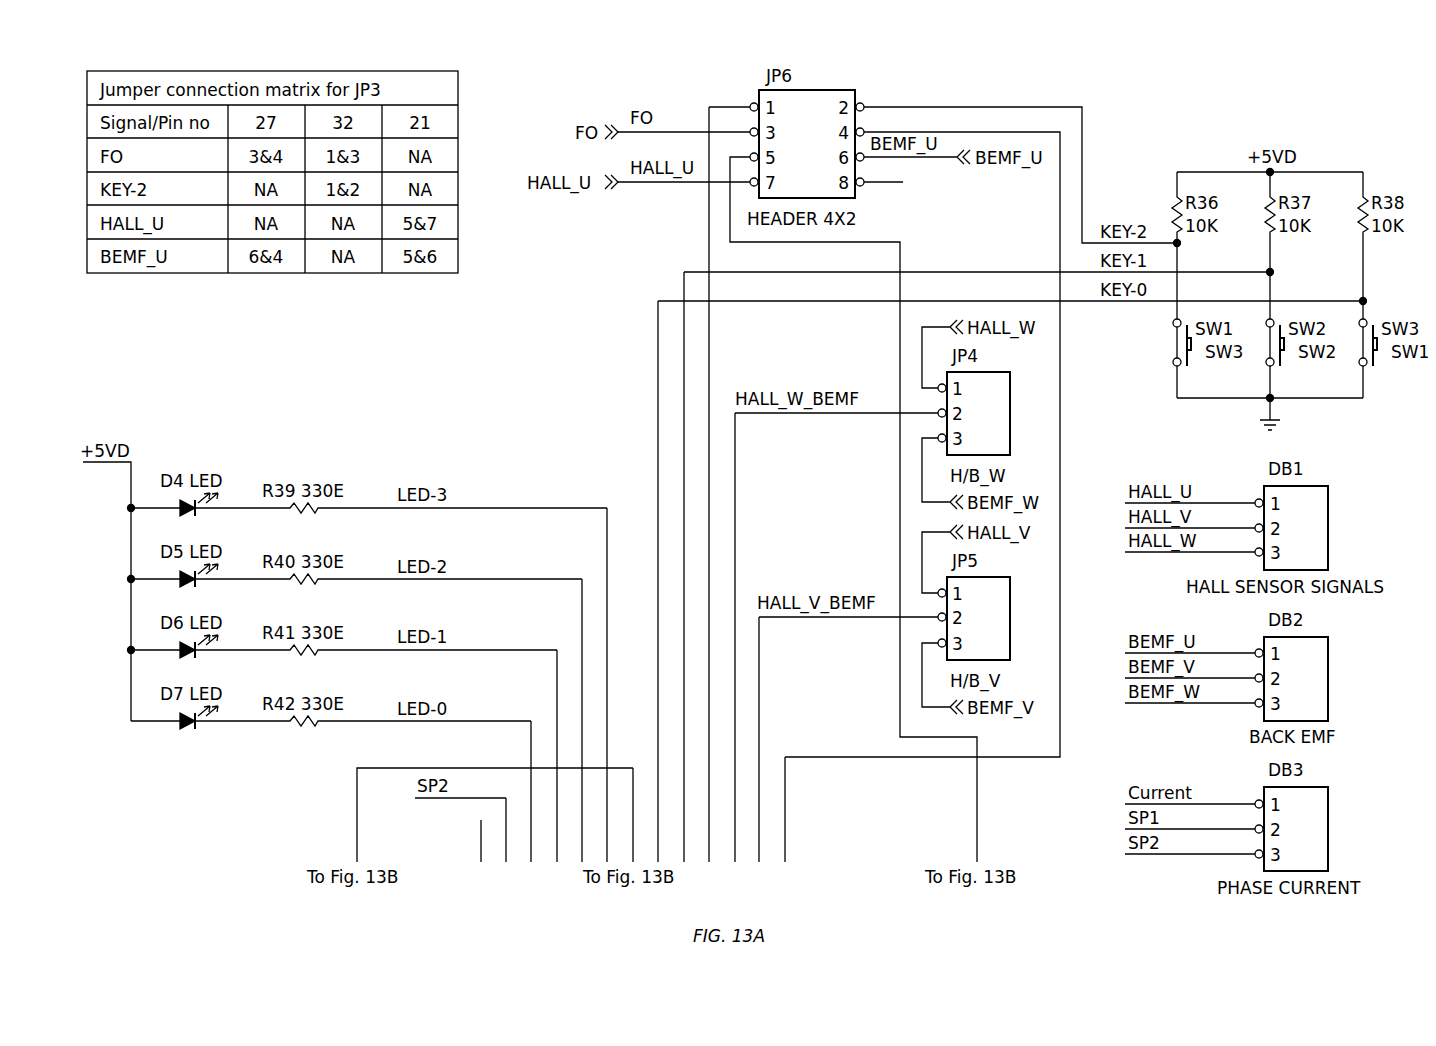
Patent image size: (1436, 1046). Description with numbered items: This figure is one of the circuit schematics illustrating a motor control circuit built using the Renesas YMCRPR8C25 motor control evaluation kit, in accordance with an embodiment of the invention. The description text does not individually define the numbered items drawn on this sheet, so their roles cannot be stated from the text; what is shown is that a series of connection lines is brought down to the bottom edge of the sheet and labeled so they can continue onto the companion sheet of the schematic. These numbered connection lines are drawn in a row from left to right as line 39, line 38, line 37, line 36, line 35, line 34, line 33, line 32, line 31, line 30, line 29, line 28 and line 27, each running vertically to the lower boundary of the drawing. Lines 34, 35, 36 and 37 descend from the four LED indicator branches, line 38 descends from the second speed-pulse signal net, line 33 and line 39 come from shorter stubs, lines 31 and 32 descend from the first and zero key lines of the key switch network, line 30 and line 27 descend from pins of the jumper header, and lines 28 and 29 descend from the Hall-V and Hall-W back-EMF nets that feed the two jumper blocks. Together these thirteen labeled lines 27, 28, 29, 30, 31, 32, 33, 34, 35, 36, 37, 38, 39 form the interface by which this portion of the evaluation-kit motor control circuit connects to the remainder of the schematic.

The connector line 27 to FIG. 13B (JP6 pin 4) 27 is at (776, 809).
The connector line 28 to FIG. 13B (HALL_V_BEMF) 28 is at (839, 739).
The connector line 29 to FIG. 13B (HALL_W_BEMF) 29 is at (827, 637).
The connector line 30 to FIG. 13B (JP6 pin 1) 30 is at (700, 484).
The connector line 31 to FIG. 13B (KEY-1) 31 is at (675, 567).
The connector line 32 to FIG. 13B (KEY-0) 32 is at (649, 581).
The connector line 33 to FIG. 13B 33 is at (624, 815).
The connector line 34 to FIG. 13B (LED-3) 34 is at (598, 685).
The connector line 35 to FIG. 13B (LED-2) 35 is at (573, 720).
The connector line 36 to FIG. 13B (LED-1) 36 is at (548, 756).
The connector line 37 to FIG. 13B (LED-0) 37 is at (522, 791).
The connector line 38 to FIG. 13B (SP2) 38 is at (497, 830).
The connector line 39 to FIG. 13B 39 is at (472, 841).